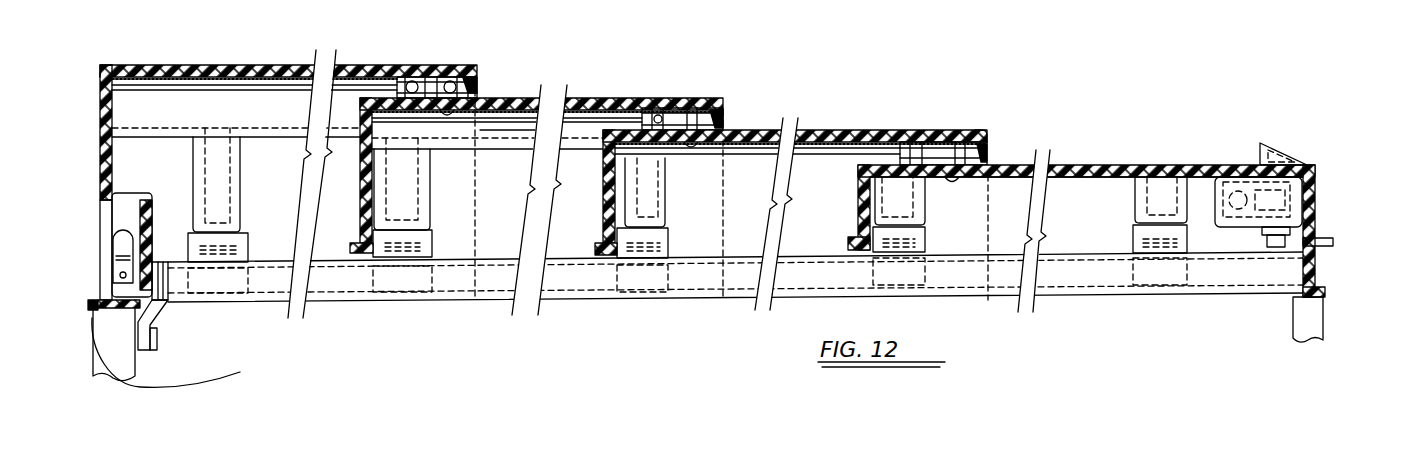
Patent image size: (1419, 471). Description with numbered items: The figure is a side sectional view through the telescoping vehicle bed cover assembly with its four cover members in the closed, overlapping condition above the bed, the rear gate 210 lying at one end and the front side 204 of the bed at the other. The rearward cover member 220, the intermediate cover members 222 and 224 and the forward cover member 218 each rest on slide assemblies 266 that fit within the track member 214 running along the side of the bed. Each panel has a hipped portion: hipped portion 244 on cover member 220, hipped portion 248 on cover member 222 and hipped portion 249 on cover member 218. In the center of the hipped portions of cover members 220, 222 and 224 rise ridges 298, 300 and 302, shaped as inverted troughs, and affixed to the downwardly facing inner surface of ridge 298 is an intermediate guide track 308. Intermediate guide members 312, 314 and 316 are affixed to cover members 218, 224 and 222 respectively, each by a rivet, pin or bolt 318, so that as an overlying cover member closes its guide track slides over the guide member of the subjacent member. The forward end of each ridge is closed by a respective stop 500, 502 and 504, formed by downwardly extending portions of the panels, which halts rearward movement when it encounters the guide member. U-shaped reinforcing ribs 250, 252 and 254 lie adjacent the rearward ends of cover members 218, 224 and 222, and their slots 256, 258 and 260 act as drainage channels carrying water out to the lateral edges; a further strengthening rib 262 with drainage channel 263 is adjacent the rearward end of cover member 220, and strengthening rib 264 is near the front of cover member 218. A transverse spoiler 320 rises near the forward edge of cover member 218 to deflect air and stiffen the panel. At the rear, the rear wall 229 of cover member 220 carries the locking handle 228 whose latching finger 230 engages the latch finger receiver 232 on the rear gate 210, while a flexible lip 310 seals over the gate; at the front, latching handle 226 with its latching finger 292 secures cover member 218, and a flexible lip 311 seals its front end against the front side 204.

The front side of the vehicle bed 204 is at (1303, 323).
The rear gate 210 is at (137, 367).
The track member 214 is at (333, 290).
The forward cover member 218 is at (1072, 160).
The rearward cover member 220 is at (162, 63).
The cover member 222 is at (588, 100).
The cover member 224 is at (826, 122).
The latching handle 226 is at (1290, 198).
The locking handle 228 is at (123, 232).
The rear wall 229 is at (102, 92).
The latching finger 230 is at (166, 313).
The latch finger receiver 232 is at (158, 340).
The hipped portion 244 is at (173, 128).
The hipped portion 248 is at (500, 133).
The hipped portion 249 is at (1098, 167).
The reinforcing rib 250 is at (893, 213).
The reinforcing rib 252 is at (668, 213).
The reinforcing rib 254 is at (430, 205).
The drainage channel 256 is at (898, 195).
The drainage channel 258 is at (645, 193).
The drainage channel 260 is at (407, 185).
The transverse strengthening rib 262 is at (238, 197).
The drainage channel 263 is at (217, 168).
The transverse strengthening rib 264 is at (1137, 206).
The slide assembly 266 is at (237, 240).
The latching finger 292 is at (1327, 238).
The ridge 298 is at (430, 67).
The ridge 300 is at (712, 105).
The ridge 302 is at (960, 137).
The intermediate guide track 308 is at (224, 77).
The flexible lip 310 is at (190, 352).
The flexible lip 311 is at (1313, 290).
The intermediate guide member 312 is at (930, 150).
The intermediate guide member 314 is at (717, 120).
The intermediate guide member 316 is at (412, 78).
The bolt 318 is at (457, 112).
The spoiler 320 is at (1280, 145).
The stop 500 is at (473, 87).
The stop 502 is at (722, 127).
The stop 504 is at (988, 147).